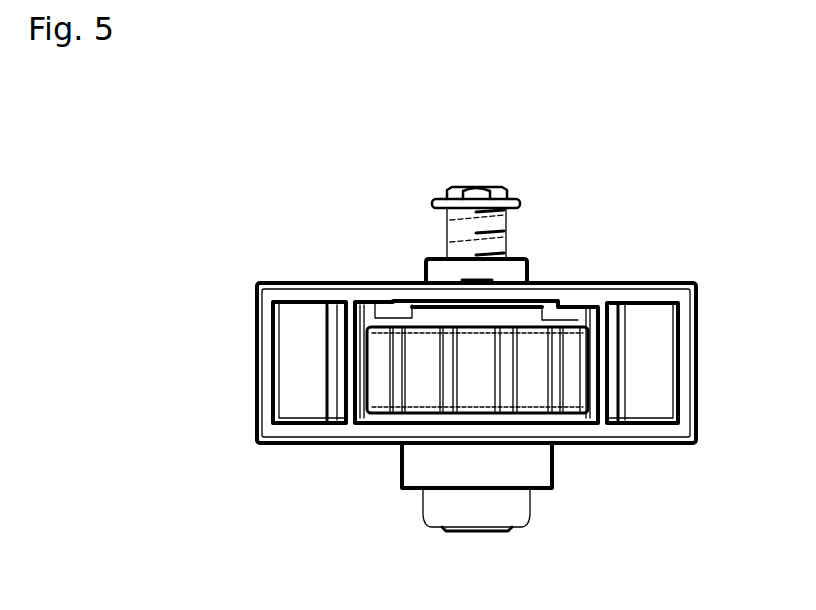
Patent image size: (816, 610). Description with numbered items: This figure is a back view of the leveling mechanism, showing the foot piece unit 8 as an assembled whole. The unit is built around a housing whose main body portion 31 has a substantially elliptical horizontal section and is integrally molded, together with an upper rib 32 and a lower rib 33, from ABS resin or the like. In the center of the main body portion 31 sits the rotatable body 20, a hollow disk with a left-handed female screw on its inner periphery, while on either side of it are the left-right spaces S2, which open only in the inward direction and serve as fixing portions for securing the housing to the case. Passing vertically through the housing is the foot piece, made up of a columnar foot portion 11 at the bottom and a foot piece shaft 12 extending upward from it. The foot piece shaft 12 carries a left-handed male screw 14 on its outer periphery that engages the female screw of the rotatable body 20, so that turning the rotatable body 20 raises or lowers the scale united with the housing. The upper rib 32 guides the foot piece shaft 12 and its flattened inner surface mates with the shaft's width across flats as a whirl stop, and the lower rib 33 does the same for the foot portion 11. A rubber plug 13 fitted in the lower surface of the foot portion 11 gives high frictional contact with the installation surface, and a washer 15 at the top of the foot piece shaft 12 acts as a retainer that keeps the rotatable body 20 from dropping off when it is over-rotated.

The foot piece unit 8 is at (256, 199).
The foot portion 11 is at (435, 510).
The foot piece shaft 12 is at (487, 190).
The rubber plug 13 is at (483, 535).
The male screw 14 is at (455, 233).
The washer 15 is at (432, 203).
The rotatable body 20 is at (415, 370).
The main body portion 31 is at (684, 301).
The upper rib 32 is at (530, 268).
The lower rib 33 is at (538, 465).
The left-right spaces S2 is at (298, 393).